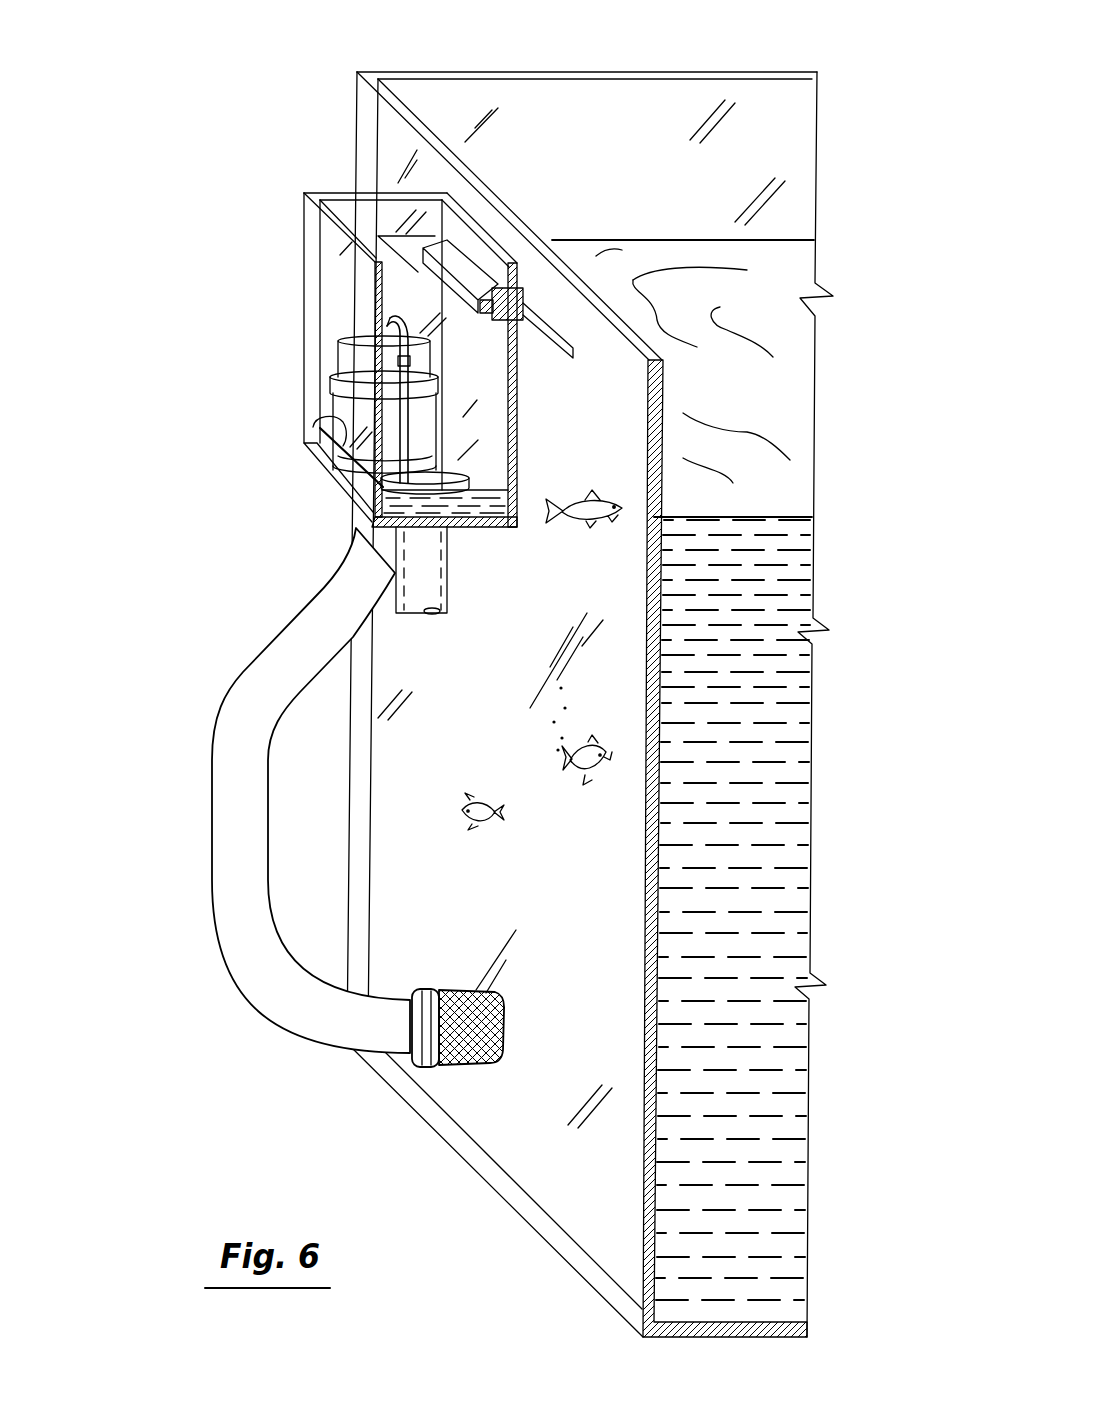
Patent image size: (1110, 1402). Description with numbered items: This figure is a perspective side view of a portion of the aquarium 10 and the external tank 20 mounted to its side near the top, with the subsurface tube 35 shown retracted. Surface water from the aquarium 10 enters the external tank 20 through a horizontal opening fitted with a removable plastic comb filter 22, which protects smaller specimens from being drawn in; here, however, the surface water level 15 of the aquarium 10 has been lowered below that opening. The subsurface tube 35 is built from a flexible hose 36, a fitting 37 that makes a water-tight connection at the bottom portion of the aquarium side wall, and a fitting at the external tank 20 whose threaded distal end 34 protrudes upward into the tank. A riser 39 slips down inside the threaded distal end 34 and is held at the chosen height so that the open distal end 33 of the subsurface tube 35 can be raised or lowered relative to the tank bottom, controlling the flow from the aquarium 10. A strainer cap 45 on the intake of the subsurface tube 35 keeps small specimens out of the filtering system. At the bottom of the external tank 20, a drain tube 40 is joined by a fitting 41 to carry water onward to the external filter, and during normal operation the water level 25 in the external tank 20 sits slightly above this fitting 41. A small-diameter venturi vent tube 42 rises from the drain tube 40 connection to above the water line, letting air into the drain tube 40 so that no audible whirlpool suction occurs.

The aquarium 10 is at (528, 72).
The surface water level 15 is at (703, 240).
The external tank 20 is at (332, 193).
The comb filter 22 is at (473, 265).
The water level 25 is at (316, 420).
The open distal end 33 is at (371, 330).
The threaded distal end 34 is at (352, 415).
The subsurface tube 35 is at (357, 508).
The flexible hose 36 is at (262, 707).
The fitting 37 is at (417, 989).
The riser 39 is at (337, 336).
The drain tube 40 is at (433, 560).
The fitting 41 is at (450, 476).
The venturi vent tube 42 is at (398, 361).
The strainer cap 45 is at (493, 1023).